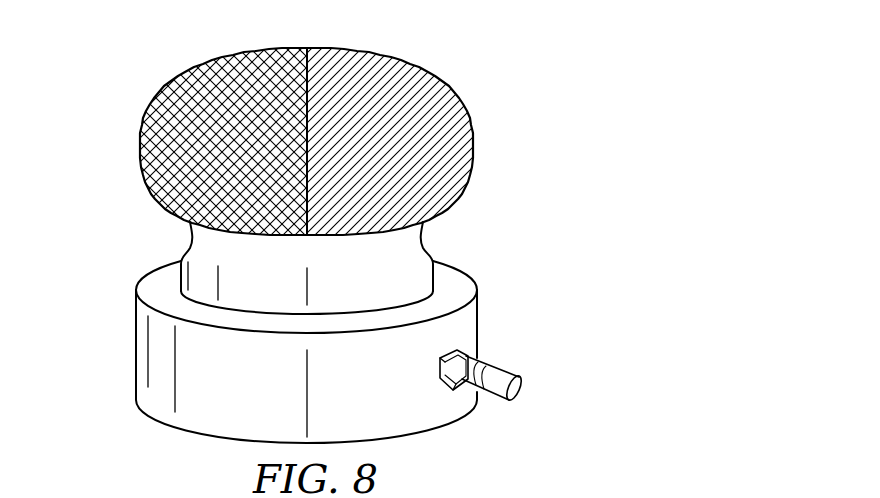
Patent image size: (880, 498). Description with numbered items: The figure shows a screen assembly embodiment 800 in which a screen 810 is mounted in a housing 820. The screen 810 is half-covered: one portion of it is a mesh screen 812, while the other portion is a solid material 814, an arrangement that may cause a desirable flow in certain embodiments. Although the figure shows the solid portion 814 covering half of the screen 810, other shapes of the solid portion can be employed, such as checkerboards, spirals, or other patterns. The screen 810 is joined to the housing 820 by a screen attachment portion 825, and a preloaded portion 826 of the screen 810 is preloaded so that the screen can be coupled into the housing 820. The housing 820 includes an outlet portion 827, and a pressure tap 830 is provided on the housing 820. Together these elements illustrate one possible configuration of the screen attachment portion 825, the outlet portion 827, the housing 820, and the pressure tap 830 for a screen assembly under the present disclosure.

The screen assembly embodiment 800 is at (475, 14).
The screen 810 is at (318, 40).
The mesh screen 812 is at (176, 96).
The solid material 814 is at (407, 106).
The housing 820 is at (103, 273).
The screen attachment portion 825 is at (425, 232).
The preloaded portion 826 is at (190, 234).
The outlet portion 827 is at (393, 410).
The pressure tap 830 is at (503, 370).